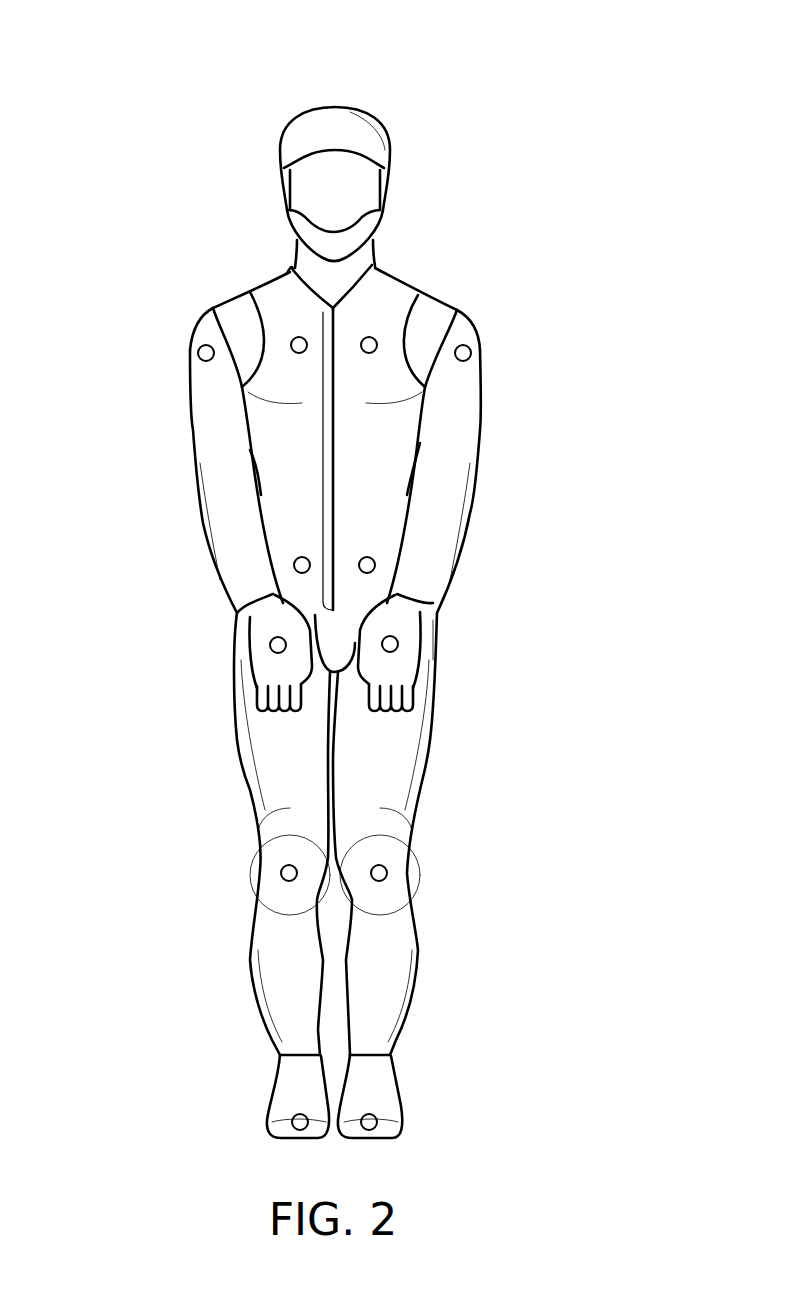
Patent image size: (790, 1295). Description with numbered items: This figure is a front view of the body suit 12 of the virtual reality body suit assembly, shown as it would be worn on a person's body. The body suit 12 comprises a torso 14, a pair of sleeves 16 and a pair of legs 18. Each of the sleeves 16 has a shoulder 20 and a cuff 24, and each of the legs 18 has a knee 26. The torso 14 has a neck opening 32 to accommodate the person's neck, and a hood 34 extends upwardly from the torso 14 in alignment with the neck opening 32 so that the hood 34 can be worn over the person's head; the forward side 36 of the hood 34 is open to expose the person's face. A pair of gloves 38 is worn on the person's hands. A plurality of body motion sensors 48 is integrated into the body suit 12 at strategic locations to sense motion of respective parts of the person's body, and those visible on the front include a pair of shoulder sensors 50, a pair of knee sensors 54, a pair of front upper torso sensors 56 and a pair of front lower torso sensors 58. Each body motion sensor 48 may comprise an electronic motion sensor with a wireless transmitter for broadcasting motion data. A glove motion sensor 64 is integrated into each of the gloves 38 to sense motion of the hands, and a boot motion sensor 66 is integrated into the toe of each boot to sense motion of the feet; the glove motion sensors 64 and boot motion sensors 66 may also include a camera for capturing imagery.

The body suit 12 is at (172, 299).
The torso 14 is at (258, 435).
The sleeves 16 is at (178, 498).
The legs 18 is at (213, 726).
The shoulder 20 is at (193, 328).
The cuff 24 is at (432, 645).
The knee 26 is at (273, 870).
The neck opening 32 is at (312, 290).
The hood 34 is at (312, 108).
The forward side 36 is at (348, 137).
The gloves 38 is at (270, 665).
The body motion sensors 48 is at (349, 549).
The shoulder sensors 50 is at (206, 361).
The knee sensors 54 is at (283, 864).
The front upper torso sensors 56 is at (293, 340).
The front lower torso sensors 58 is at (360, 568).
The glove motion sensors 64 is at (271, 641).
The boot motion sensors 66 is at (293, 1116).